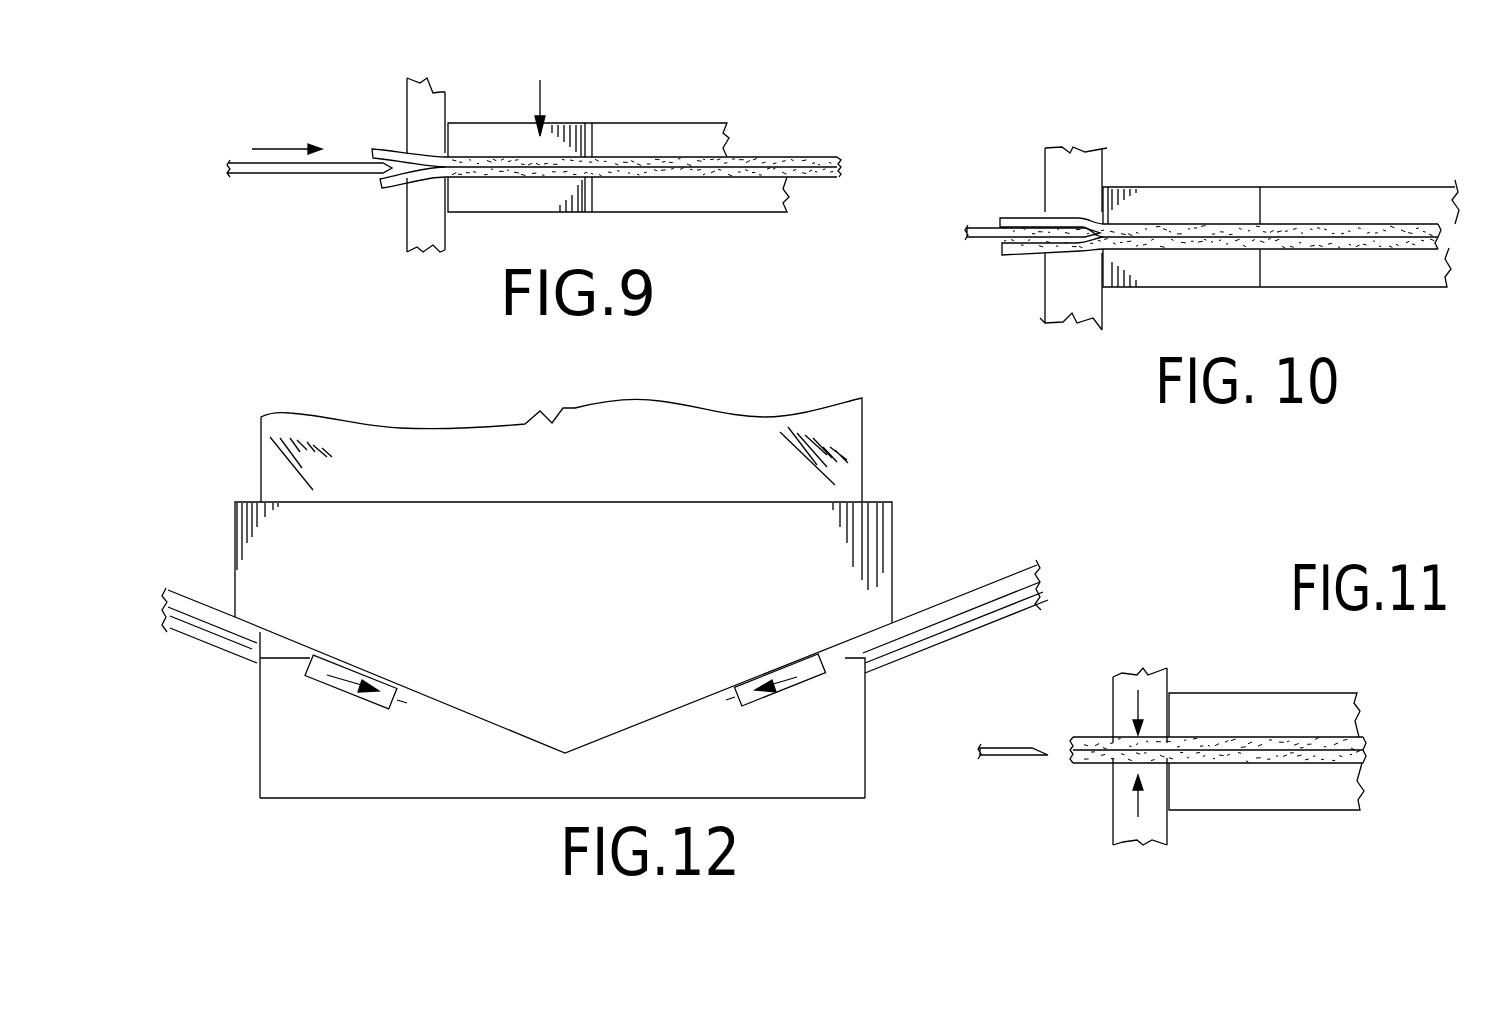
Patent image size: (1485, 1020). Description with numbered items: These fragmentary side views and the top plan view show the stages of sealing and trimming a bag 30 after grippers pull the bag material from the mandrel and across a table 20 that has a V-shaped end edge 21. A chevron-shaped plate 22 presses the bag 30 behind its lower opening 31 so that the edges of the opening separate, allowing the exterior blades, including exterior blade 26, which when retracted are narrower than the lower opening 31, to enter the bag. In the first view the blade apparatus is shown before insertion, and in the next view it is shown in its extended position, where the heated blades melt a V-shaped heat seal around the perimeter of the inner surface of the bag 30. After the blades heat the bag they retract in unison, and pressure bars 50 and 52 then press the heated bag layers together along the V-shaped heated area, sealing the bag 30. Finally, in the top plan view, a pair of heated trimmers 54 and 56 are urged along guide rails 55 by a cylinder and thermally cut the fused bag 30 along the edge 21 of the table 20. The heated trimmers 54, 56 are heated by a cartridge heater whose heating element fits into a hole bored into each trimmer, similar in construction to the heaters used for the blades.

In FIG. 9, the table 20 is at (680, 205).
In FIG. 10, the table 20 is at (1293, 273).
In FIG. 11, the table 20 is at (1222, 792).
In FIG. 12, the V-shaped end edge 21 is at (640, 722).
In FIG. 9, the chevron-shaped plate 22 is at (615, 132).
In FIG. 10, the chevron-shaped plate 22 is at (1305, 188).
In FIG. 11, the chevron-shaped plate 22 is at (1238, 700).
In FIG. 12, the chevron-shaped plate 22 is at (705, 583).
In FIG. 9, the exterior blade 26 is at (268, 173).
In FIG. 10, the exterior blade 26 is at (990, 225).
In FIG. 11, the exterior blade 26 is at (1010, 747).
In FIG. 9, the bag 30 is at (817, 157).
In FIG. 10, the bag 30 is at (1363, 227).
In FIG. 11, the bag 30 is at (1292, 737).
In FIG. 12, the bag 30 is at (805, 750).
In FIG. 12, the lower opening 31 is at (397, 800).
In FIG. 9, the pressure bar 50 is at (420, 110).
In FIG. 10, the pressure bar 50 is at (1048, 168).
In FIG. 11, the pressure bar 50 is at (1125, 703).
In FIG. 9, the pressure bar 52 is at (423, 215).
In FIG. 10, the pressure bar 52 is at (1065, 285).
In FIG. 11, the pressure bar 52 is at (1128, 812).
In FIG. 12, the heated trimmer 54 is at (805, 680).
In FIG. 12, the guide rails 55 is at (195, 600).
In FIG. 12, the heated trimmer 56 is at (323, 678).